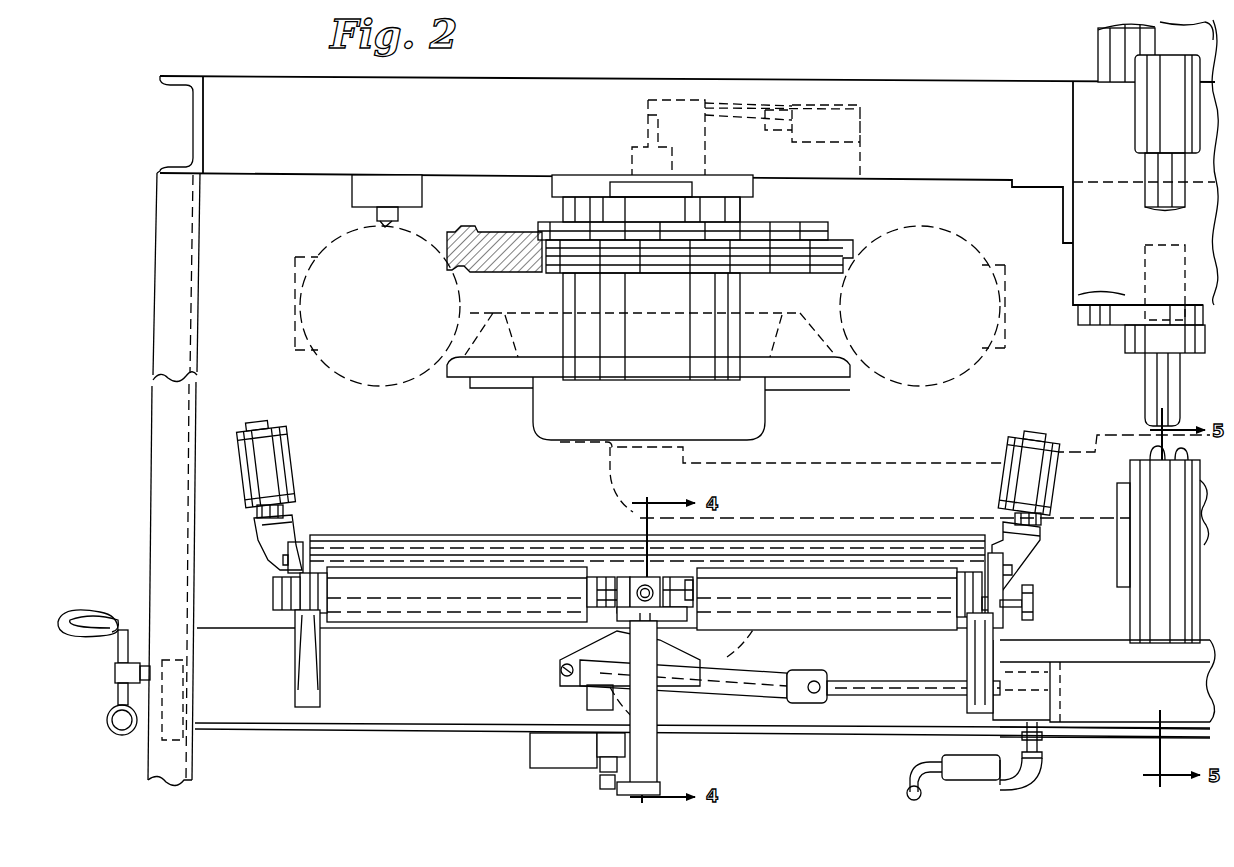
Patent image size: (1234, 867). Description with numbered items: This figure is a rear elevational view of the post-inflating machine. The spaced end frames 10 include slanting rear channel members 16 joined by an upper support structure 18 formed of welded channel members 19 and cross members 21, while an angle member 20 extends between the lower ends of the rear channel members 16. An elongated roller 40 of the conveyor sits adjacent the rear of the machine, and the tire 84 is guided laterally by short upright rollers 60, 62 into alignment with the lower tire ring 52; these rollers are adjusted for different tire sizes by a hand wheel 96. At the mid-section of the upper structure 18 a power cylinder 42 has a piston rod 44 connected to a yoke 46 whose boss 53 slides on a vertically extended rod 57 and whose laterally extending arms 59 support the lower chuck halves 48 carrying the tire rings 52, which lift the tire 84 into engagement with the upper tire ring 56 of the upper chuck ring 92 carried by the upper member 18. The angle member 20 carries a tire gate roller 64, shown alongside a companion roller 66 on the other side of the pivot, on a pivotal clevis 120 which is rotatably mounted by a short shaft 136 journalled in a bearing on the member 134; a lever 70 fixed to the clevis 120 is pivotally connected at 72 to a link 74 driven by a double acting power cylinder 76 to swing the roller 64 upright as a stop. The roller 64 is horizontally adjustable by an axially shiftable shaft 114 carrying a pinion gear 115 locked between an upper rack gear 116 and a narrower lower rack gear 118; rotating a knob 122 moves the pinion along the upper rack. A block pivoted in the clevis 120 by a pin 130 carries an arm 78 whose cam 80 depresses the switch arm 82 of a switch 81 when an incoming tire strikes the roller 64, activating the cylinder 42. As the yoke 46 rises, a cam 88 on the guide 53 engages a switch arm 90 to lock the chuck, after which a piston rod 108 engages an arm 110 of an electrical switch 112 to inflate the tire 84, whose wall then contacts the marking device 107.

The end frame 10 is at (178, 352).
The slanting rear channel member 16 is at (160, 452).
The upper support structure 18 is at (905, 95).
The channel member 19 is at (192, 125).
The angle member 20 is at (462, 729).
The cross member 21 is at (571, 97).
The elongated roller 40 is at (392, 546).
The power cylinder 42 is at (1115, 55).
The piston rod 44 is at (1156, 400).
The yoke 46 is at (958, 500).
The lower chuck half 48 is at (765, 420).
The lower tire ring 52 is at (835, 386).
The boss 53 is at (1178, 576).
The upper tire ring 56 is at (843, 256).
The vertically extended rod 57 is at (1175, 208).
The yoke arm 59 is at (808, 492).
The upright roller 60 is at (272, 470).
The upright roller 62 is at (1020, 470).
The tire gate roller 64 is at (852, 610).
The left cylinder 66 is at (376, 625).
The lever 70 is at (545, 630).
The pivotal connection 72 is at (562, 674).
The link 74 is at (752, 686).
The double acting power cylinder 76 is at (1133, 712).
The arm 78 is at (647, 704).
The cam 80 is at (656, 788).
The switch 81 is at (530, 755).
The switch arm 82 is at (602, 786).
The tire 84 is at (990, 364).
The cam 88 is at (1117, 552).
The switch arm 90 is at (1075, 298).
The upper chuck ring 92 is at (740, 211).
The hand wheel 96 is at (98, 625).
The marking device 107 is at (383, 224).
The piston rod 108 is at (648, 129).
The arm 110 is at (677, 100).
The electrical switch 112 is at (860, 127).
The shaft 114 is at (984, 602).
The pinion gear 115 is at (690, 580).
The upper rack gear 116 is at (677, 580).
The lower rack gear 118 is at (668, 613).
The clevis 120 is at (640, 584).
The knob 122 is at (1034, 603).
The pin 130 is at (647, 615).
The member 134 is at (590, 585).
The short shaft 136 is at (623, 585).